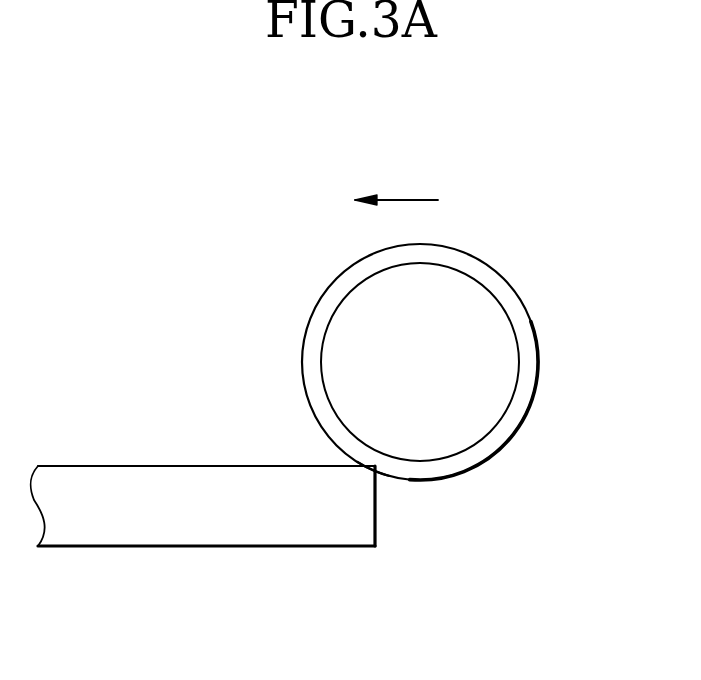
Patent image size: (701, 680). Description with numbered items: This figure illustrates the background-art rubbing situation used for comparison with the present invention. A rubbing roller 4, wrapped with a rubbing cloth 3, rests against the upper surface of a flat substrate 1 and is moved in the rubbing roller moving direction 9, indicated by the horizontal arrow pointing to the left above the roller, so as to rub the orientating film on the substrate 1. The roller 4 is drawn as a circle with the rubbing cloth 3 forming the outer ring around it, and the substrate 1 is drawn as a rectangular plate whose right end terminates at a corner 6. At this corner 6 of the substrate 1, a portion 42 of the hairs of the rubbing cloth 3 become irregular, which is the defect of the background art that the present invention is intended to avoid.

The substrate 1 is at (95, 528).
The rubbing cloth 3 is at (520, 433).
The rubbing roller 4 is at (457, 337).
The corner 6 is at (370, 465).
The rubbing roller moving direction 9 is at (410, 200).
The portion of hairs 42 is at (379, 468).